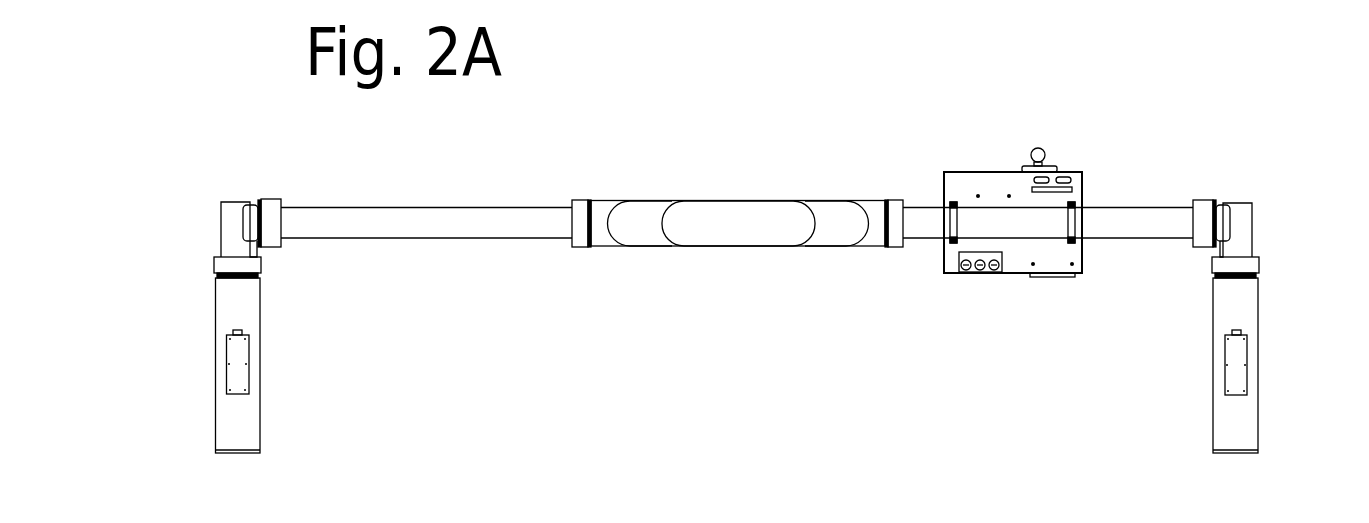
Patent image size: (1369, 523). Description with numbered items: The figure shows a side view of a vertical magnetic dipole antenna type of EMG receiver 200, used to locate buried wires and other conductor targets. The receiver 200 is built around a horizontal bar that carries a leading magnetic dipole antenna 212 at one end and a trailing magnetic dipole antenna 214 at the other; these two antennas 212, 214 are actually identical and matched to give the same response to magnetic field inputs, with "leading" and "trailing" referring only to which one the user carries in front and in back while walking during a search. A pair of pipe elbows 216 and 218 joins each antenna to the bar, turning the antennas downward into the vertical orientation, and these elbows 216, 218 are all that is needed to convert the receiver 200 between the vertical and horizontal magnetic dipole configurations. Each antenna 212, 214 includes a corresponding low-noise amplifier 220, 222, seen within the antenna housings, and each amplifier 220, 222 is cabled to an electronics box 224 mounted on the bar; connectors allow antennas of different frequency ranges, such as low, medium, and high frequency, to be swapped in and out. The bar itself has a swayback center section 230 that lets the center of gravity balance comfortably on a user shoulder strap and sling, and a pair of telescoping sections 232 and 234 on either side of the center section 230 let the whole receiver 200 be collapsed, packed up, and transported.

The vertical magnetic dipole antenna type of EMG receiver 200 is at (720, 82).
The leading magnetic dipole antenna 212 is at (263, 330).
The trailing magnetic dipole antenna 214 is at (1260, 327).
The pipe elbow 216 is at (240, 202).
The pipe elbow 218 is at (1252, 209).
The low-noise amplifier 220 is at (226, 345).
The low-noise amplifier 222 is at (1227, 388).
The electronics box 224 is at (1083, 193).
The swayback center section 230 is at (748, 202).
The telescoping section 232 is at (434, 207).
The telescoping section 234 is at (1152, 234).